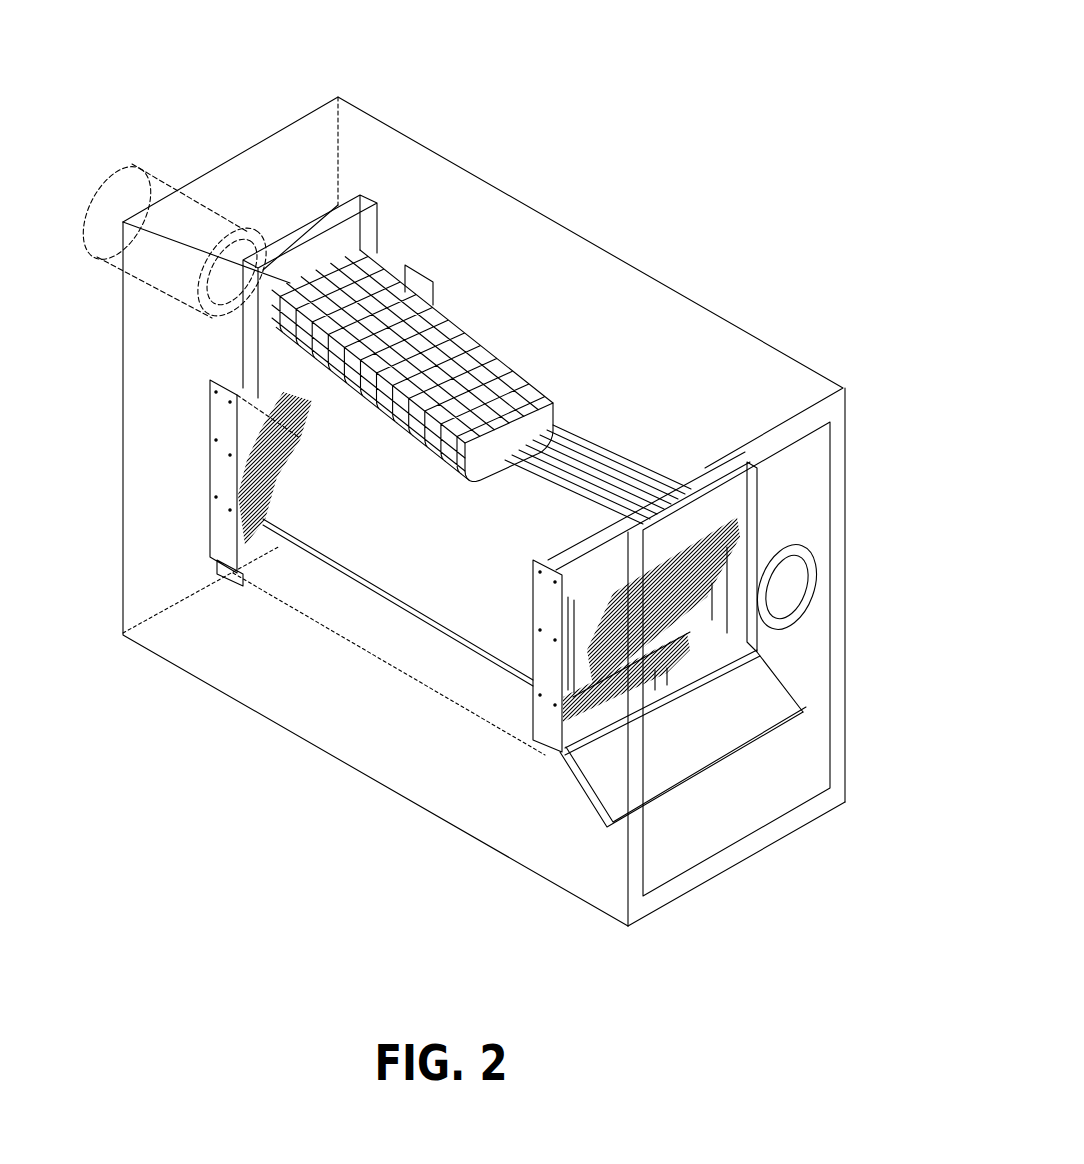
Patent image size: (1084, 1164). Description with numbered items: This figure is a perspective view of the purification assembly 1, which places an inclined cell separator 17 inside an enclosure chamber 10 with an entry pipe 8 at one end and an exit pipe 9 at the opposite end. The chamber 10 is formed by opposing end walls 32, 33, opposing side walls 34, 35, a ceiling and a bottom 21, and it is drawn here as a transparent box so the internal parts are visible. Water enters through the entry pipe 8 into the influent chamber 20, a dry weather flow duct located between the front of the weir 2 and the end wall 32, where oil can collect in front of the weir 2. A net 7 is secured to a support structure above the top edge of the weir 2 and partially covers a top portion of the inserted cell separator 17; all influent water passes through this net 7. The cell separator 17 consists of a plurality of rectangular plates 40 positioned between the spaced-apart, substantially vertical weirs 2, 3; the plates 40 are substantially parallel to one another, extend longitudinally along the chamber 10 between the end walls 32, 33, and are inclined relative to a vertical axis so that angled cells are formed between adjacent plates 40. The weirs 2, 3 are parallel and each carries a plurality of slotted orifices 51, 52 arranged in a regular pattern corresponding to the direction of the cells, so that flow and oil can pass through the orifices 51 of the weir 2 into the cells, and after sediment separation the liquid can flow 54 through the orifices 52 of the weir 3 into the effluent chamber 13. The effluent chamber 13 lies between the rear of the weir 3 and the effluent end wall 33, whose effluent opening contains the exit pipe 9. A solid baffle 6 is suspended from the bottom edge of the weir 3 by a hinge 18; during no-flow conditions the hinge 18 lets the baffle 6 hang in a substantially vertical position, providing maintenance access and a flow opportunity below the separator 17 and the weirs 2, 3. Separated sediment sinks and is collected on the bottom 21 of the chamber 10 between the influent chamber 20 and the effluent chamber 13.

The purification assembly 1 is at (724, 88).
The weir 2 is at (262, 418).
The weir 3 is at (585, 592).
The solid baffle 6 is at (767, 703).
The net 7 is at (455, 325).
The entry pipe 8 is at (134, 182).
The exit pipe 9 is at (765, 545).
The enclosure chamber 10 is at (610, 355).
The effluent chamber 13 is at (696, 500).
The inclined cell separator 17 is at (277, 510).
The hinge 18 is at (609, 732).
The influent chamber 20 is at (205, 352).
The bottom 21 is at (173, 663).
The end wall 32 is at (312, 147).
The end wall 33 is at (765, 838).
The side wall 34 is at (630, 856).
The side wall 35 is at (840, 707).
The rectangular plates 40 is at (438, 552).
The orifices 51 is at (267, 457).
The orifices 52 is at (565, 752).
The flow 54 is at (285, 642).